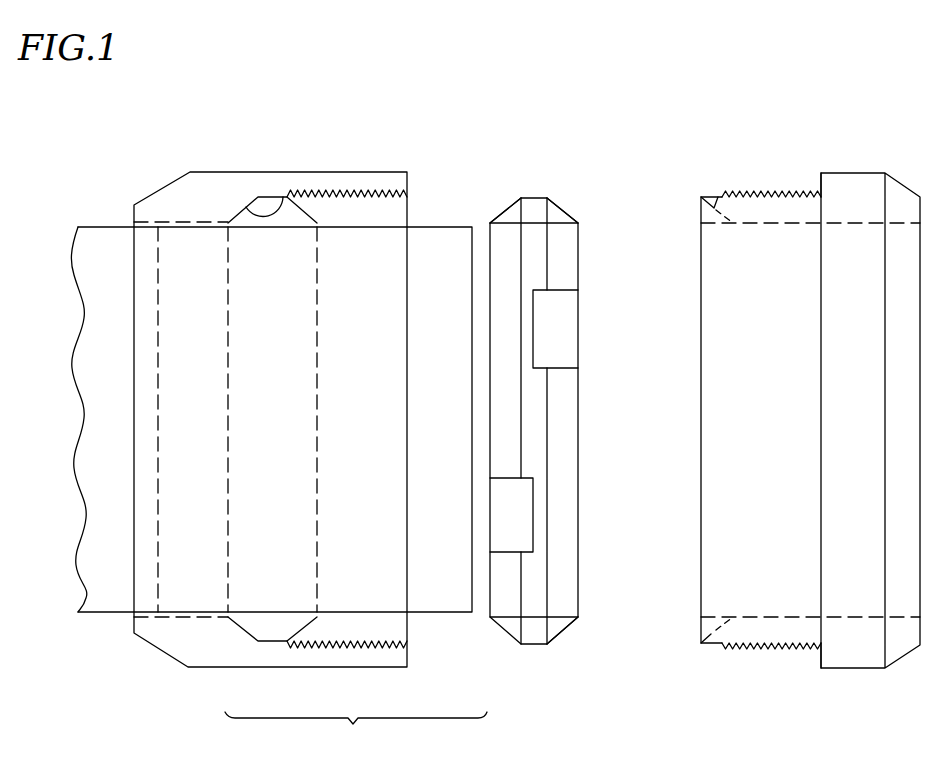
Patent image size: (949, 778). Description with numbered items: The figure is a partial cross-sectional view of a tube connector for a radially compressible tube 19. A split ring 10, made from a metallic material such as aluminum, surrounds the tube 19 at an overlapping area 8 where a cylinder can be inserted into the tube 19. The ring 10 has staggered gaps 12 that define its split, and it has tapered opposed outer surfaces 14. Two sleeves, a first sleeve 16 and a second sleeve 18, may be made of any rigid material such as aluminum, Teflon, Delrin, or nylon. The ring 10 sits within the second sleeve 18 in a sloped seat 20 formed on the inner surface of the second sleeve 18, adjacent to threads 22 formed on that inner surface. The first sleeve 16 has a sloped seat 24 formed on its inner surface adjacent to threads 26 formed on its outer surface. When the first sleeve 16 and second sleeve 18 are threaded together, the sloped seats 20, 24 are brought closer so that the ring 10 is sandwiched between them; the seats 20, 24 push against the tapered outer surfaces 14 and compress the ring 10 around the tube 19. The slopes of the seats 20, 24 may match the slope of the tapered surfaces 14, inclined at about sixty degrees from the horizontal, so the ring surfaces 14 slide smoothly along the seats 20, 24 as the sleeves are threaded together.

The overlapping area 8 is at (356, 736).
The split ring 10 is at (536, 198).
The staggered gaps 12 is at (560, 330).
The tapered opposed outer surfaces 14 is at (505, 212).
The first sleeve 16 is at (852, 173).
The second sleeve 18 is at (358, 172).
The radially compressible tube 19 is at (108, 226).
The sloped seat 20 is at (283, 197).
The threads 22 is at (315, 192).
The sloped seat 24 is at (718, 196).
The threads 26 is at (776, 192).